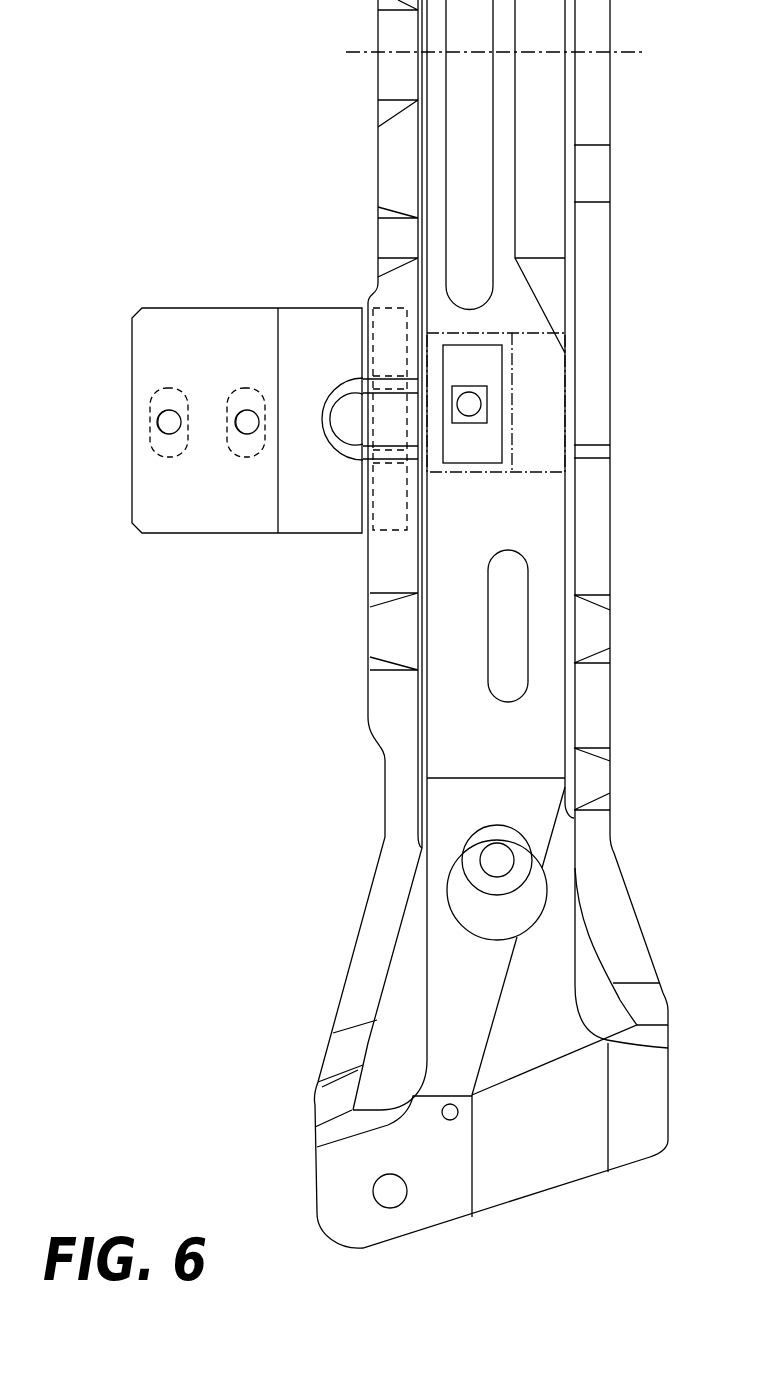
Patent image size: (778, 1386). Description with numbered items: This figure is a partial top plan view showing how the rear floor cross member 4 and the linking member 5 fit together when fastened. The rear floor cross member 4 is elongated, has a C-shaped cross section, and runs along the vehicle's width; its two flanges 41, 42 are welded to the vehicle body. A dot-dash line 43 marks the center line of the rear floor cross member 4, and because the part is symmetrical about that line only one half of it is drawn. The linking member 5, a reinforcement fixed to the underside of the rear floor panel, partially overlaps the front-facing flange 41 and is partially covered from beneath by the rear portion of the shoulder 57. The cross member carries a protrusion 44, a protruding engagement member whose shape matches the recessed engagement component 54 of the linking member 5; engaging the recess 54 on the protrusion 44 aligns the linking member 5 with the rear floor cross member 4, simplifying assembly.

The rear floor cross member 4 is at (612, 294).
The flange 41 is at (394, 158).
The flange 42 is at (592, 172).
The dot-dash line 43 is at (613, 52).
The protrusion 44 is at (377, 425).
The linking member 5 is at (225, 308).
The recessed engagement component 54 is at (351, 411).
The shoulder 57 is at (357, 306).